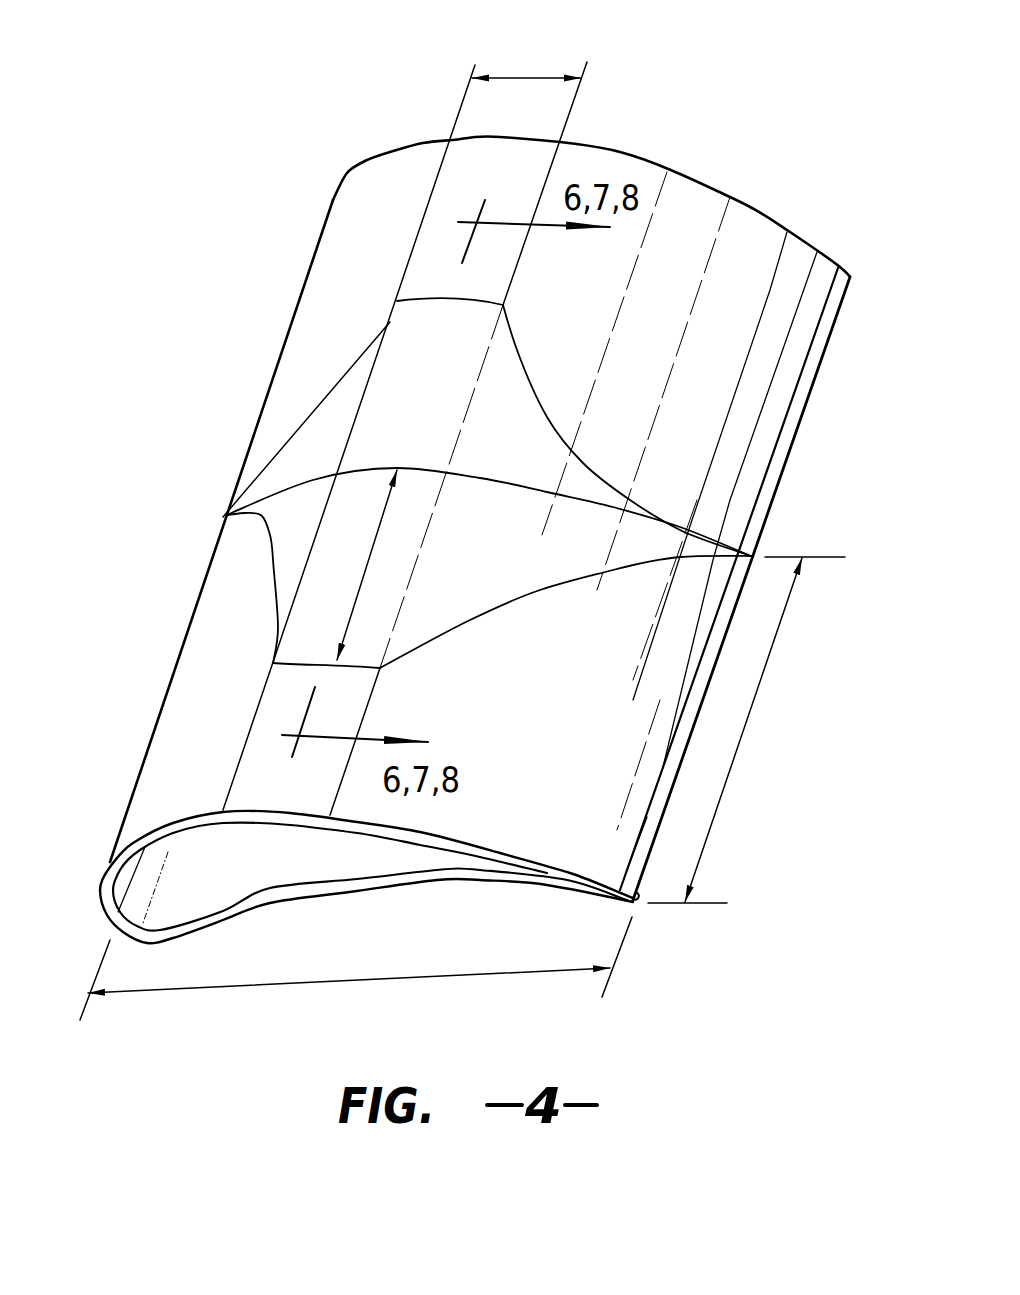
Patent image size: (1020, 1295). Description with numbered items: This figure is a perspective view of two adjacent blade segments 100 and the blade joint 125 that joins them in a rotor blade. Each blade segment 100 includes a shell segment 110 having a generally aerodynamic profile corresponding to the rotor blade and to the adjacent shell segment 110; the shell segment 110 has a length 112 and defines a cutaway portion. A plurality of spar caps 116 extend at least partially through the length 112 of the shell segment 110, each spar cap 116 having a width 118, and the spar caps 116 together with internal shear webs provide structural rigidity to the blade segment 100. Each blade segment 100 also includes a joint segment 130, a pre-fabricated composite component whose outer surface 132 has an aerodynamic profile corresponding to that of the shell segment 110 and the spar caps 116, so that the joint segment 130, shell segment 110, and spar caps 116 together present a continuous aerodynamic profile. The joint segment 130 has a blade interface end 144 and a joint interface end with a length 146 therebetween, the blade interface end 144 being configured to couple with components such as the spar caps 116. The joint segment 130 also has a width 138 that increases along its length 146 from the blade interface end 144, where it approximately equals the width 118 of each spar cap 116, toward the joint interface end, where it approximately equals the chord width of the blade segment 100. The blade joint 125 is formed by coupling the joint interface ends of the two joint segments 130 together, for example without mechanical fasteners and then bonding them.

The blade segment 100 is at (280, 220).
The shell segment 110 is at (713, 392).
The length 112 is at (760, 682).
The spar cap 116 is at (477, 153).
The width 118 is at (523, 80).
The blade joint 125 is at (308, 474).
The joint segment 130 is at (408, 363).
The outer surface 132 is at (383, 413).
The width 138 is at (342, 980).
The blade interface end 144 is at (503, 303).
The length 146 is at (380, 587).